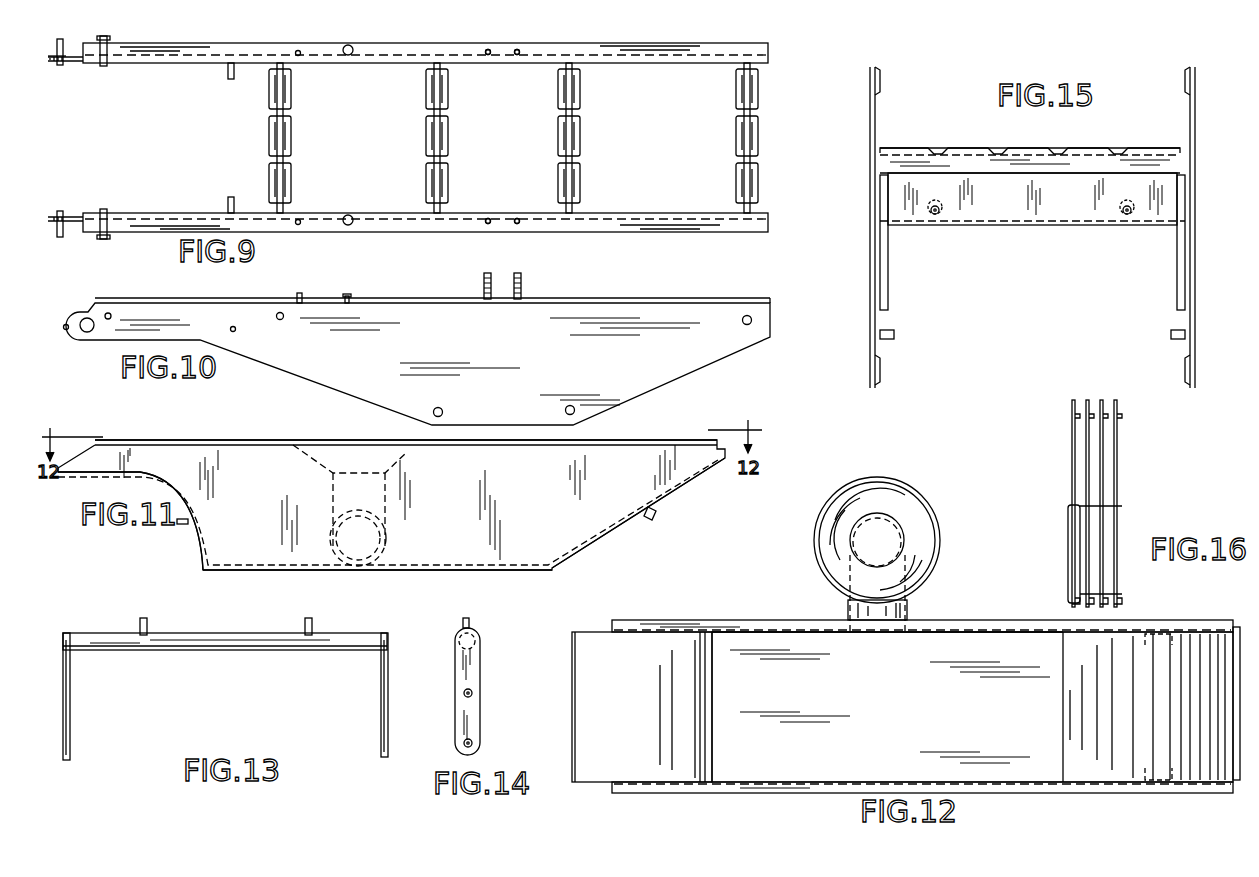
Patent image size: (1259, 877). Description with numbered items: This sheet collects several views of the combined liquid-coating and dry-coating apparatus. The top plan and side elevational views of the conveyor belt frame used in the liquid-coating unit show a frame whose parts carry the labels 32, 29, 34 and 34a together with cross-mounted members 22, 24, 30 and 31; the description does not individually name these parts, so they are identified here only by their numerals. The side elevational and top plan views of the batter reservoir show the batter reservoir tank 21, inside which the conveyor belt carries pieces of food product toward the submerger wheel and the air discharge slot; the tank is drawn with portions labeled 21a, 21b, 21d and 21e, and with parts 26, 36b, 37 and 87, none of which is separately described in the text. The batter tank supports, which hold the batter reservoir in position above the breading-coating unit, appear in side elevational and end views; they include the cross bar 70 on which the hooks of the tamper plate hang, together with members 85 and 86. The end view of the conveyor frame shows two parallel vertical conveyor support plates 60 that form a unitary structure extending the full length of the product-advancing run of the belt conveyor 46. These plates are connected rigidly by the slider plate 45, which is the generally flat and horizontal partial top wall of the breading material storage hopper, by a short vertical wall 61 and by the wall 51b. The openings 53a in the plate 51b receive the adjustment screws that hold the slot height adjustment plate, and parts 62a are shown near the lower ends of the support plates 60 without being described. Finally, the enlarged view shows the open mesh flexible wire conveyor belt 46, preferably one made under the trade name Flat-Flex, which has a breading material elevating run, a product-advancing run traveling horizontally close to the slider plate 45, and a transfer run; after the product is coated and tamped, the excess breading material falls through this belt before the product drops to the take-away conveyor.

In FIG. 11, the batter reservoir tank 21 is at (454, 522).
In FIG. 12, the batter reservoir tank 21 is at (1000, 618).
In FIG. 11, the bottom wall of side member 21a is at (478, 570).
In FIG. 12, the bottom wall of side member 21a is at (876, 696).
In FIG. 11, the curved front portion of side member 21b is at (240, 564).
In FIG. 11, the inclined rear portion of side member 21d is at (578, 542).
In FIG. 12, the inclined rear portion of side member 21d is at (1100, 714).
In FIG. 11, the top flange of side member 21e is at (230, 444).
In FIG. 12, the top flange of side member 21e is at (784, 619).
In FIG. 9, the roller 22 is at (750, 134).
In FIG. 9, the roller 24 is at (283, 134).
In FIG. 11, the front plate 26 is at (190, 505).
In FIG. 12, the front plate 26 is at (628, 722).
In FIG. 9, the stop pin 29 is at (233, 80).
In FIG. 9, the roller 30 is at (440, 134).
In FIG. 9, the roller 31 is at (572, 134).
In FIG. 9, the side rail 32 is at (160, 62).
In FIG. 10, the side rail 32 is at (612, 297).
In FIG. 10, the mounting bolts 34 is at (527, 271).
In FIG. 9, the bolt holes 34a is at (517, 56).
In FIG. 11, the wheel support 36b is at (395, 546).
In FIG. 12, the wheel support 36b is at (908, 612).
In FIG. 11, the wheel 37 is at (405, 462).
In FIG. 12, the wheel 37 is at (925, 530).
In FIG. 15, the slider plate 45 is at (918, 148).
In FIG. 16, the open mesh wire conveyor belt 46 is at (1118, 472).
In FIG. 15, the wall 51b is at (1018, 214).
In FIG. 15, the openings 53a is at (928, 224).
In FIG. 15, the conveyor support plates 60 is at (870, 166).
In FIG. 15, the short vertical wall 61 is at (1092, 149).
In FIG. 15, the post bracket 62a is at (878, 372).
In FIG. 13, the cross bar 70 is at (284, 640).
In FIG. 14, the cross bar 70 is at (482, 650).
In FIG. 13, the leg 85 is at (70, 720).
In FIG. 14, the leg 85 is at (472, 708).
In FIG. 13, the locating pin 86 is at (148, 626).
In FIG. 14, the locating pin 86 is at (470, 622).
In FIG. 11, the fastener 87 is at (188, 528).